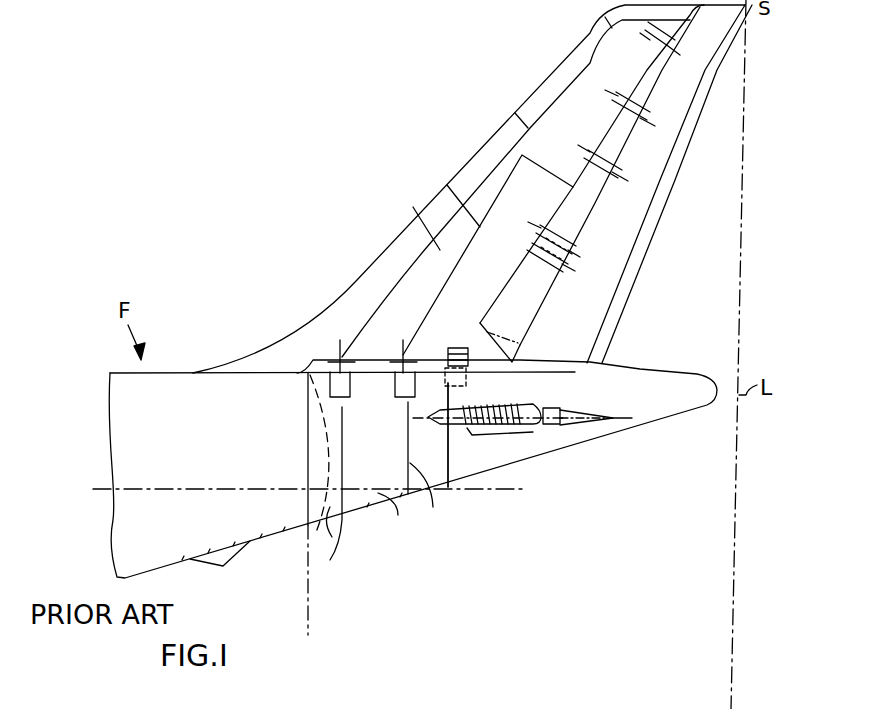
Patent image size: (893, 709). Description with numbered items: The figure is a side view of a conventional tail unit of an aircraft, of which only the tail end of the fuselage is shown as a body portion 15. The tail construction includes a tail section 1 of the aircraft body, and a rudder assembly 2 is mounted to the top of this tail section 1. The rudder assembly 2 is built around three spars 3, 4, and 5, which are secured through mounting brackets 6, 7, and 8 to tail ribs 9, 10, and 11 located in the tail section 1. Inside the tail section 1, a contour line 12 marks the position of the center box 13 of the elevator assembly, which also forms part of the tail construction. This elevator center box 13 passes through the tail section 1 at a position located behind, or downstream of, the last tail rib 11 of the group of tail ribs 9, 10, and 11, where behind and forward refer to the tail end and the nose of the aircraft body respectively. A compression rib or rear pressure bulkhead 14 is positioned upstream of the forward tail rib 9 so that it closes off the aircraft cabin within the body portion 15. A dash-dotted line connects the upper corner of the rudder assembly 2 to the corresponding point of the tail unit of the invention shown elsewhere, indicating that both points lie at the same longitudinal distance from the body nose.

The tail unit section 1 is at (391, 522).
The rudder assembly 2 is at (542, 84).
The spar 3 is at (420, 214).
The spar 4 is at (447, 185).
The spar 5 is at (645, 72).
The mounting bracket 6 is at (342, 360).
The mounting bracket 7 is at (403, 360).
The mounting bracket 8 is at (457, 348).
The tail rib 9 is at (335, 540).
The tail rib 10 is at (437, 501).
The tail rib 11 is at (450, 457).
The contour line 12 is at (600, 440).
The elevator center box 13 is at (530, 430).
The compression rib or rear pressure bulkhead 14 is at (308, 440).
The aircraft body portion 15 is at (212, 436).